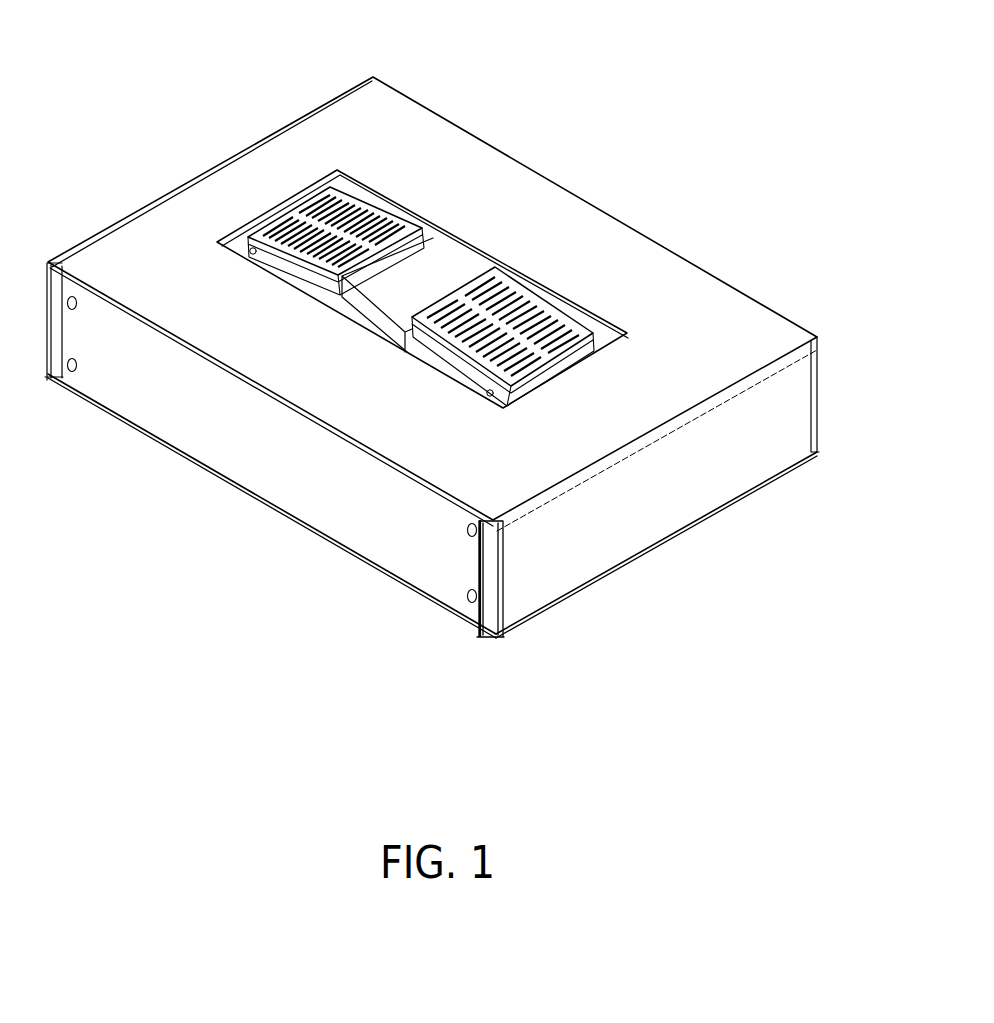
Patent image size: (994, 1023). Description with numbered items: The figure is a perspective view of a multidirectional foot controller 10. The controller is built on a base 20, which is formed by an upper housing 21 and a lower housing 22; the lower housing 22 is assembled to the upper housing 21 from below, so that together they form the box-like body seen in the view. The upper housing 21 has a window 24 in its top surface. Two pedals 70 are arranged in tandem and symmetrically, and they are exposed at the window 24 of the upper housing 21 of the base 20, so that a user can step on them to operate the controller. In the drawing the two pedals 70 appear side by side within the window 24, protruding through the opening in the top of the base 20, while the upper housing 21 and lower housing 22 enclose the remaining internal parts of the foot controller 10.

The multidirectional foot controller 10 is at (432, 348).
The base 20 is at (432, 357).
The upper housing 21 is at (432, 304).
The lower housing 22 is at (275, 460).
The window 24 is at (613, 323).
The pedals 70 is at (313, 193).